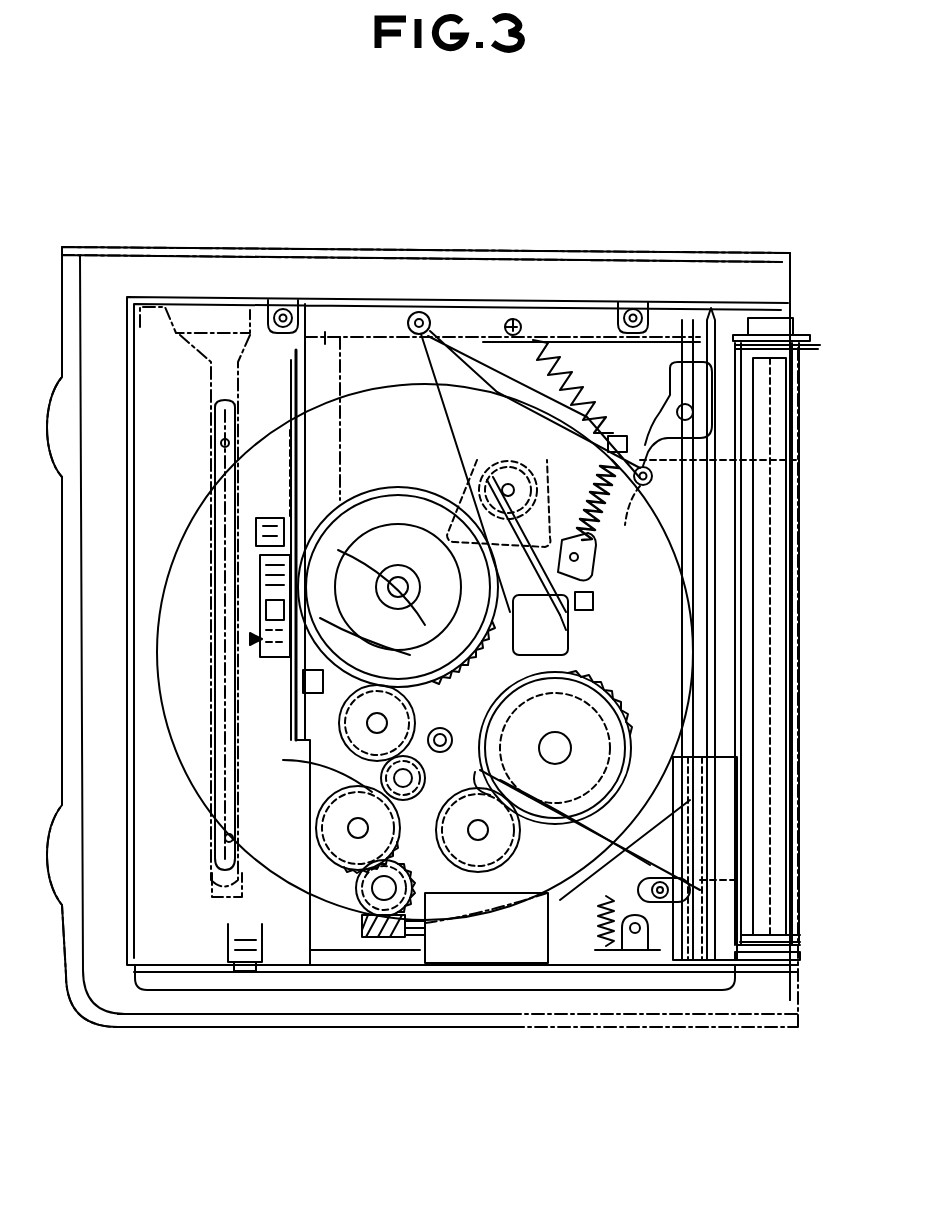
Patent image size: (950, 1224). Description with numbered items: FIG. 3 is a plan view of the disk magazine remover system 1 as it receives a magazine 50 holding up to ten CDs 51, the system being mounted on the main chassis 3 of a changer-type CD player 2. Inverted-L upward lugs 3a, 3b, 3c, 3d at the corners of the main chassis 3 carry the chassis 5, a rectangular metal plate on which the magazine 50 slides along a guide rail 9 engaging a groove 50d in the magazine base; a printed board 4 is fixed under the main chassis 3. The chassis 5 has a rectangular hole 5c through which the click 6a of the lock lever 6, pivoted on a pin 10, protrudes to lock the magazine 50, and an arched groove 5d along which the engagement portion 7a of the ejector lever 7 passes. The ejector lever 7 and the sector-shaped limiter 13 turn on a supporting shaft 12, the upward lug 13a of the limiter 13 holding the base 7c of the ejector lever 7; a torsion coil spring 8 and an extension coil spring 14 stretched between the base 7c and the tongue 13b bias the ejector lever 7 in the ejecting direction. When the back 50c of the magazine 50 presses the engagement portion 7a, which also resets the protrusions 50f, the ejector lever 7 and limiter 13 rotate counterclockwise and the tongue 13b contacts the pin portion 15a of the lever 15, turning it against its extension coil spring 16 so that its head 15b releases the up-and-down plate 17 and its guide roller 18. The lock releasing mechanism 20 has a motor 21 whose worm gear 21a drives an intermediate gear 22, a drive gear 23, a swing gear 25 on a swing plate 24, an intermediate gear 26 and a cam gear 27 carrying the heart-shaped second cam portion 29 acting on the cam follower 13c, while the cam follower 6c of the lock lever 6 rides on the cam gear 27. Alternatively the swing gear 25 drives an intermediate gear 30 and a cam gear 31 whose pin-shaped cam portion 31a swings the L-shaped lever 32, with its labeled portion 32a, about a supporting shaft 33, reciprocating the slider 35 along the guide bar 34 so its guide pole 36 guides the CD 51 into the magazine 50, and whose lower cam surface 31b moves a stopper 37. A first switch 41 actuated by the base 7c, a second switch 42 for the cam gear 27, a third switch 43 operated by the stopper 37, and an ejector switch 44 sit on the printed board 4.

The disk magazine remover system 1 is at (389, 1034).
The CD player 2 is at (674, 1030).
The main chassis 3 is at (408, 965).
The upward lug 3a is at (640, 305).
The upward lug 3b is at (290, 305).
The upward lug 3c is at (263, 941).
The upward lug 3d is at (640, 955).
The printed board 4 is at (140, 905).
The chassis 5 is at (588, 310).
The rectangular hole 5c is at (290, 528).
The arched groove 5d is at (340, 490).
The lock lever 6 is at (258, 578).
The click 6a is at (268, 518).
The cam follower 6c is at (288, 440).
The ejector lever 7 is at (440, 395).
The engagement portion 7a is at (428, 312).
The base 7c is at (592, 580).
The torsion coil spring 8 is at (566, 640).
The guide rail 9 is at (235, 792).
The pin 10 is at (252, 641).
The supporting shaft 12 is at (508, 484).
The limiter 13 is at (548, 393).
The upward lug 13a is at (527, 566).
The tongue 13b is at (705, 463).
The cam follower 13c is at (490, 500).
The extension coil spring 14 is at (598, 535).
The lever 15 is at (660, 415).
The pin portion 15a is at (632, 502).
The head 15b is at (693, 365).
The extension coil spring 16 is at (548, 365).
The up-and-down plate 17 is at (742, 392).
The guide roller 18 is at (760, 440).
The lock releasing mechanism 20 is at (348, 935).
The motor 21 is at (510, 965).
The worm gear 21a is at (398, 940).
The intermediate gear 22 is at (370, 905).
The drive gear 23 is at (325, 805).
The swing plate 24 is at (300, 755).
The swing gear 25 is at (415, 800).
The intermediate gear 26 is at (355, 700).
The cam gear 27 is at (472, 653).
The second cam portion 29 is at (395, 495).
The intermediate gear 30 is at (495, 862).
The cam gear 31 is at (590, 680).
The cam portion 31a is at (530, 785).
The lower cam surface 31b is at (615, 755).
The lever 32 is at (550, 730).
The arm 32a is at (700, 790).
The supporting shaft 33 is at (440, 722).
The guide bar 34 is at (695, 540).
The slider 35 is at (710, 805).
The guide pole 36 is at (750, 938).
The stopper 37 is at (588, 921).
The first switch 41 is at (592, 612).
The second switch 42 is at (258, 712).
The third switch 43 is at (735, 880).
The ejector switch 44 is at (245, 972).
The magazine 50 is at (170, 993).
The back 50c is at (180, 330).
The groove 50d is at (215, 880).
The protrusion 50f is at (518, 320).
The CD 51 is at (345, 388).